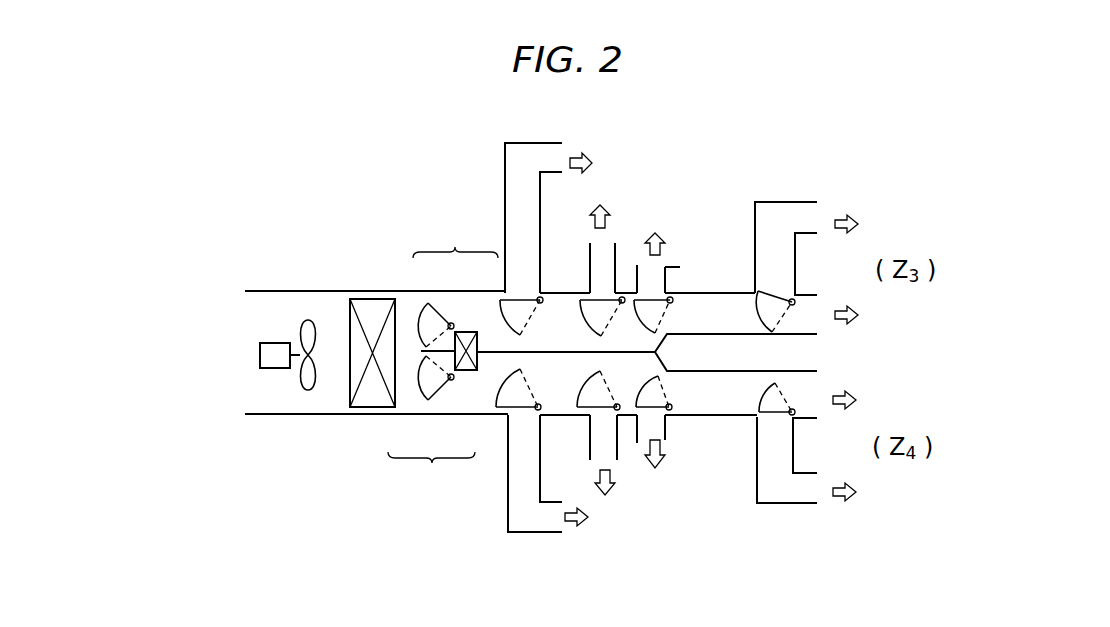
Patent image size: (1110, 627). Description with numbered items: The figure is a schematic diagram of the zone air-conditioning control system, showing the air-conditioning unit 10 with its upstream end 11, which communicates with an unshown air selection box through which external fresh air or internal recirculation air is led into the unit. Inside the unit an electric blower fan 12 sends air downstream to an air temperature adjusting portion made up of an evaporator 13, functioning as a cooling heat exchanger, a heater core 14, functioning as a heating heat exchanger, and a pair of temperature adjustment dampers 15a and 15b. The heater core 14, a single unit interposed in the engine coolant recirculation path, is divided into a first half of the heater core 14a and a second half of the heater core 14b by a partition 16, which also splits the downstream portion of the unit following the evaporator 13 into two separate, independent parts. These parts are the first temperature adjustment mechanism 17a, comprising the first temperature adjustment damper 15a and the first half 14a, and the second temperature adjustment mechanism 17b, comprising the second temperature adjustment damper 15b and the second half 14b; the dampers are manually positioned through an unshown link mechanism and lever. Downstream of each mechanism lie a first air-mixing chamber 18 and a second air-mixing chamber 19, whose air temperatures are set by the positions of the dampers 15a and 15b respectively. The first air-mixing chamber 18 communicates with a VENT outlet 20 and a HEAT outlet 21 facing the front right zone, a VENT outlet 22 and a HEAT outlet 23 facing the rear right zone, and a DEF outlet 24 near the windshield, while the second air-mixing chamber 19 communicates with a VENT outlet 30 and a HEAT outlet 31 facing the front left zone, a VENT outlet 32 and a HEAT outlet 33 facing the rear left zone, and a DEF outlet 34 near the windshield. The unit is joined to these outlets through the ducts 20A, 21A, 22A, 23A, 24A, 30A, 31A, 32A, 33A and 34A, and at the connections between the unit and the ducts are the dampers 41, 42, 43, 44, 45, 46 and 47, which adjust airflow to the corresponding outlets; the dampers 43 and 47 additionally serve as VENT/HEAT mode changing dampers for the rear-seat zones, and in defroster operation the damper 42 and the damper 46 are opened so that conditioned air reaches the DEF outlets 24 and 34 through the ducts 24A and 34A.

The air-conditioning unit 10 is at (284, 291).
The upstream end 11 is at (270, 343).
The electric blower fan 12 is at (308, 321).
The evaporator 13 is at (371, 300).
The heater core 14 is at (484, 358).
The first half of the heater core 14a is at (465, 332).
The second half of the heater core 14b is at (462, 371).
The first temperature adjustment damper 15a is at (430, 303).
The second temperature adjustment damper 15b is at (432, 404).
The partition 16 is at (555, 353).
The first temperature adjustment mechanism 17a is at (455, 240).
The second temperature adjustment mechanism 17b is at (431, 471).
The first air-mixing chamber 18 is at (493, 325).
The second air-mixing chamber 19 is at (493, 403).
The VENT outlet 20 is at (553, 157).
The duct 20A is at (540, 200).
The HEAT outlet 21 is at (606, 250).
The duct 21A is at (590, 250).
The VENT outlet 22 is at (804, 216).
The duct 22A is at (800, 253).
The HEAT outlet 23 is at (808, 314).
The duct 23A is at (800, 335).
The DEF outlet 24 is at (654, 274).
The duct 24A is at (677, 268).
The VENT outlet 30 is at (527, 533).
The duct 30A is at (506, 515).
The HEAT outlet 31 is at (606, 455).
The duct 31A is at (591, 437).
The VENT outlet 32 is at (806, 492).
The duct 32A is at (770, 504).
The HEAT outlet 33 is at (806, 398).
The duct 33A is at (804, 419).
The DEF outlet 34 is at (657, 432).
The duct 34A is at (666, 428).
The damper 41 is at (583, 292).
The damper 42 is at (656, 294).
The damper 43 is at (762, 290).
The damper 44 is at (519, 409).
The damper 45 is at (600, 412).
The damper 46 is at (654, 404).
The damper 47 is at (772, 416).